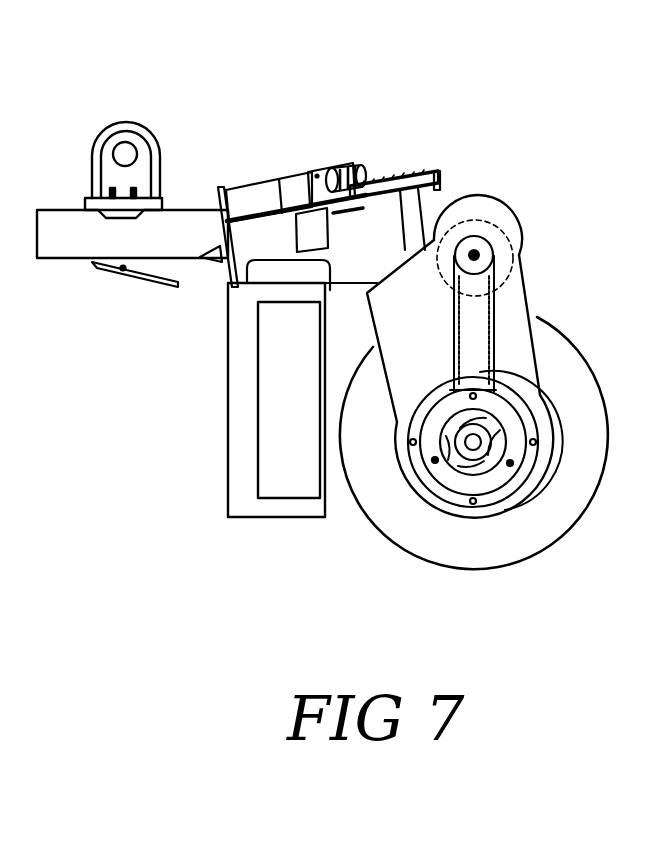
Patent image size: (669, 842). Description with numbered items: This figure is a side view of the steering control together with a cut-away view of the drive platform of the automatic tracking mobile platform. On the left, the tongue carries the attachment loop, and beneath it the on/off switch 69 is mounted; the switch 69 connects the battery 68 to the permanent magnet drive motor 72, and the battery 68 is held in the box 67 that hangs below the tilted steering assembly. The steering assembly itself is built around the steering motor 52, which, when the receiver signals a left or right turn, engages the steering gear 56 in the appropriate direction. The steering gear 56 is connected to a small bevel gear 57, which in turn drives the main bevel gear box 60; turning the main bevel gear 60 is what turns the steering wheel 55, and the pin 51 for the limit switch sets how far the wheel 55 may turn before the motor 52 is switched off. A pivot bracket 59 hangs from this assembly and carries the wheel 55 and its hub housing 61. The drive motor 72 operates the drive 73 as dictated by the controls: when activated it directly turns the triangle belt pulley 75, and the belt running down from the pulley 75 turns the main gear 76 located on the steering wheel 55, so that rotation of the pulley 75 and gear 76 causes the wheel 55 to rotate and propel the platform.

The pin 51 is at (445, 190).
The steering motor 52 is at (252, 189).
The steering wheel 55 is at (558, 515).
The steering gear 56 is at (298, 178).
The small bevel gear 57 is at (357, 166).
The pivot bracket 59 is at (442, 212).
The main bevel gear box 60 is at (438, 174).
The hub housing 61 is at (530, 368).
The box 67 is at (243, 382).
The battery 68 is at (237, 285).
The on/off switch 69 is at (237, 263).
The drive motor 72 is at (507, 224).
The drive 73 is at (493, 252).
The triangle belt pulley 75 is at (490, 335).
The main gear 76 is at (520, 453).